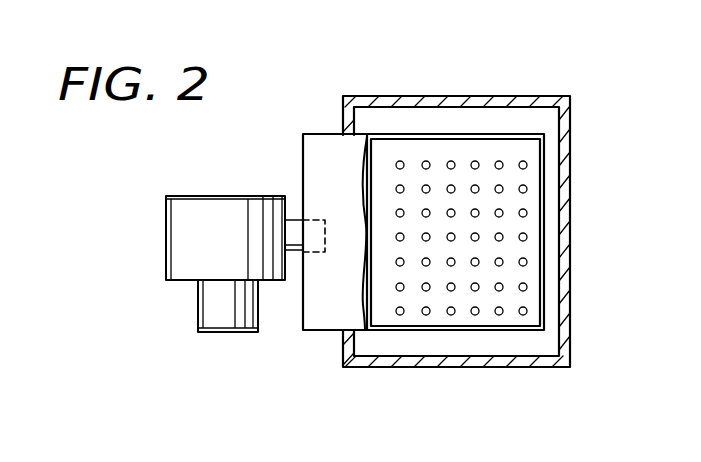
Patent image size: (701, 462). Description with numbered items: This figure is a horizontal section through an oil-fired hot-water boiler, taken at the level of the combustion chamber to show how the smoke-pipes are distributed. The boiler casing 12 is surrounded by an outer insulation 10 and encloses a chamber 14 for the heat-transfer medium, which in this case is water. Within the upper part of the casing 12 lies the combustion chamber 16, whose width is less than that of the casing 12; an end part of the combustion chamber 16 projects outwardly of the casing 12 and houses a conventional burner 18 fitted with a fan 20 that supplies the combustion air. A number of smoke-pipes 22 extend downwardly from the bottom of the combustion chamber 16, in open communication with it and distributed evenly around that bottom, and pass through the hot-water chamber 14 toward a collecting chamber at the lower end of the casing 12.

The outer insulation 10 is at (570, 135).
The boiler casing 12 is at (510, 97).
The chamber for heat-transfer medium 14 is at (498, 345).
The combustion chamber 16 is at (325, 318).
The burner 18 is at (296, 226).
The fan 20 is at (175, 223).
The smoke-pipes 22 is at (527, 190).